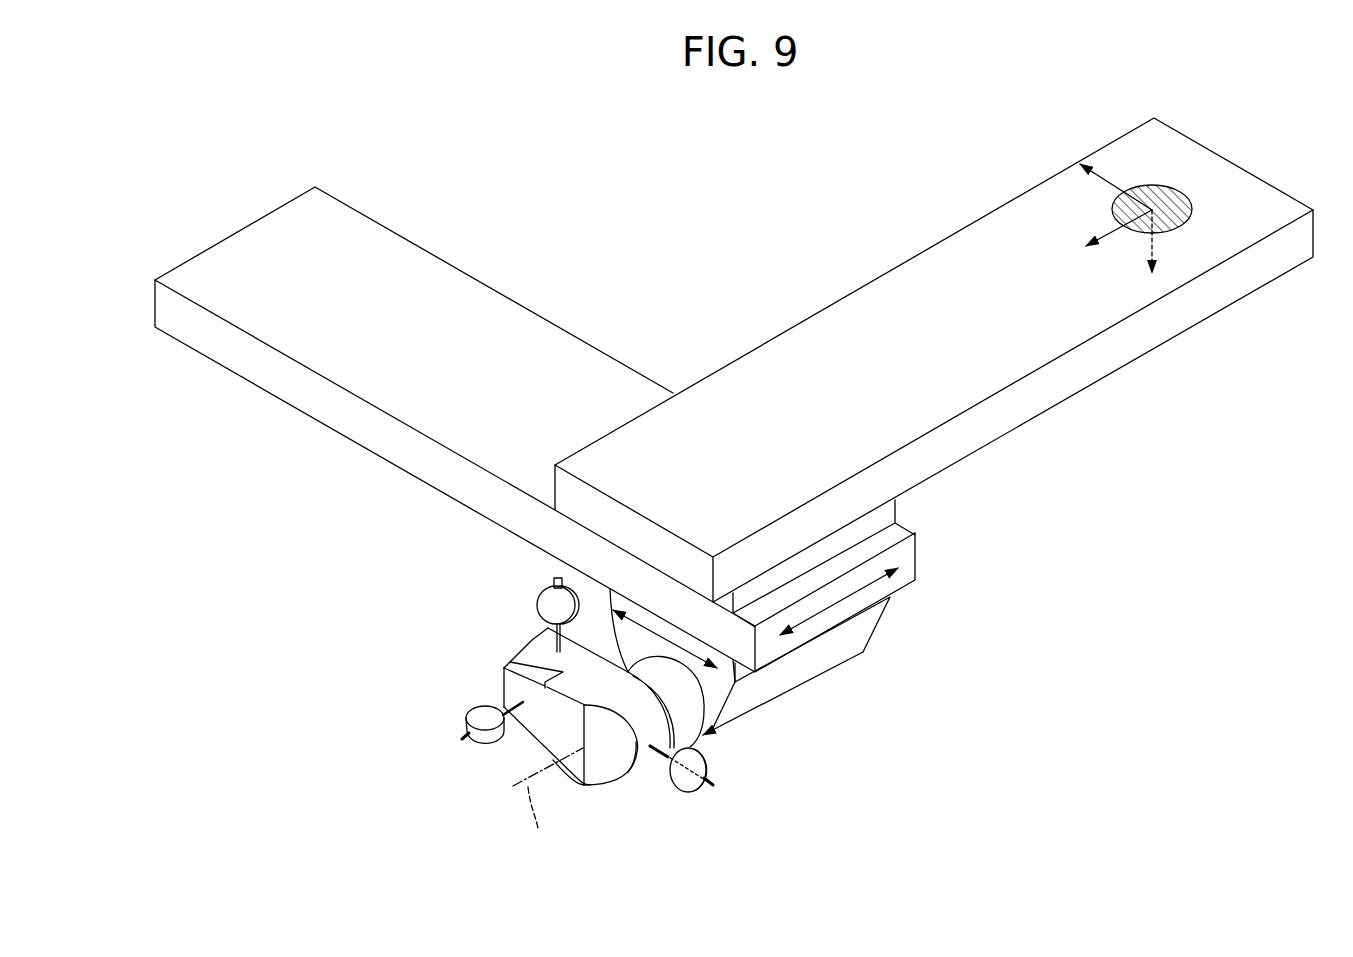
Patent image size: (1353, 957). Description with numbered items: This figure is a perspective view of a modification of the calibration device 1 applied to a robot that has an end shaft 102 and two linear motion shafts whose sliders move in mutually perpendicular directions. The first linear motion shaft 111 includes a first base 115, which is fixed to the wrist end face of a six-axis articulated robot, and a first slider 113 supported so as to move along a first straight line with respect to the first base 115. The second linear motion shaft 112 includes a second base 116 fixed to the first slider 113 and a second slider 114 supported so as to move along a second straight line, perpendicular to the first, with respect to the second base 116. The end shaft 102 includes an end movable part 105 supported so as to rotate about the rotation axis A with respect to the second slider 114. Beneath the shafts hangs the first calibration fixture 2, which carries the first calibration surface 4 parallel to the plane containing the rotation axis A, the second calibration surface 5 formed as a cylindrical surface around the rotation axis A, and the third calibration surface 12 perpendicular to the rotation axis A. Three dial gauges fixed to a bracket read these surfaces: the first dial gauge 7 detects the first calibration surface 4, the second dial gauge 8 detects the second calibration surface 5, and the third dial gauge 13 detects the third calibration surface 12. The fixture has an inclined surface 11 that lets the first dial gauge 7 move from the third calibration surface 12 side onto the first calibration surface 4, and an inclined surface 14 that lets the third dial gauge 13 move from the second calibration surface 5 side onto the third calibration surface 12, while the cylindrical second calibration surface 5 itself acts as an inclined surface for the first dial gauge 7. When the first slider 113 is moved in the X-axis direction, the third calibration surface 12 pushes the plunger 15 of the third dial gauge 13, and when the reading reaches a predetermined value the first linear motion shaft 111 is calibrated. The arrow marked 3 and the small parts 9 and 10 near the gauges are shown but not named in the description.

The probe head unit 1 is at (603, 722).
The first calibration fixture 2 is at (536, 747).
The rotation axis 3 is at (720, 791).
The first calibration surface 4 is at (587, 672).
The second calibration surface 5 is at (638, 767).
The first dial gauge 7 is at (547, 605).
The second dial gauge 8 is at (685, 782).
The shaft 9 is at (543, 638).
The shaft 10 is at (653, 757).
The inclined surface 11 is at (518, 667).
The third calibration surface 12 is at (547, 732).
The third dial gauge 13 is at (475, 718).
The inclined surface 14 is at (608, 763).
The plunger 15 is at (500, 693).
The end shaft 102 is at (723, 737).
The end movable part 105 is at (663, 705).
The first linear motion shaft 111 is at (934, 360).
The second linear motion shaft 112 is at (535, 429).
The first slider 113 is at (877, 525).
The second slider 114 is at (843, 643).
The first base 115 is at (920, 287).
The second base 116 is at (523, 367).